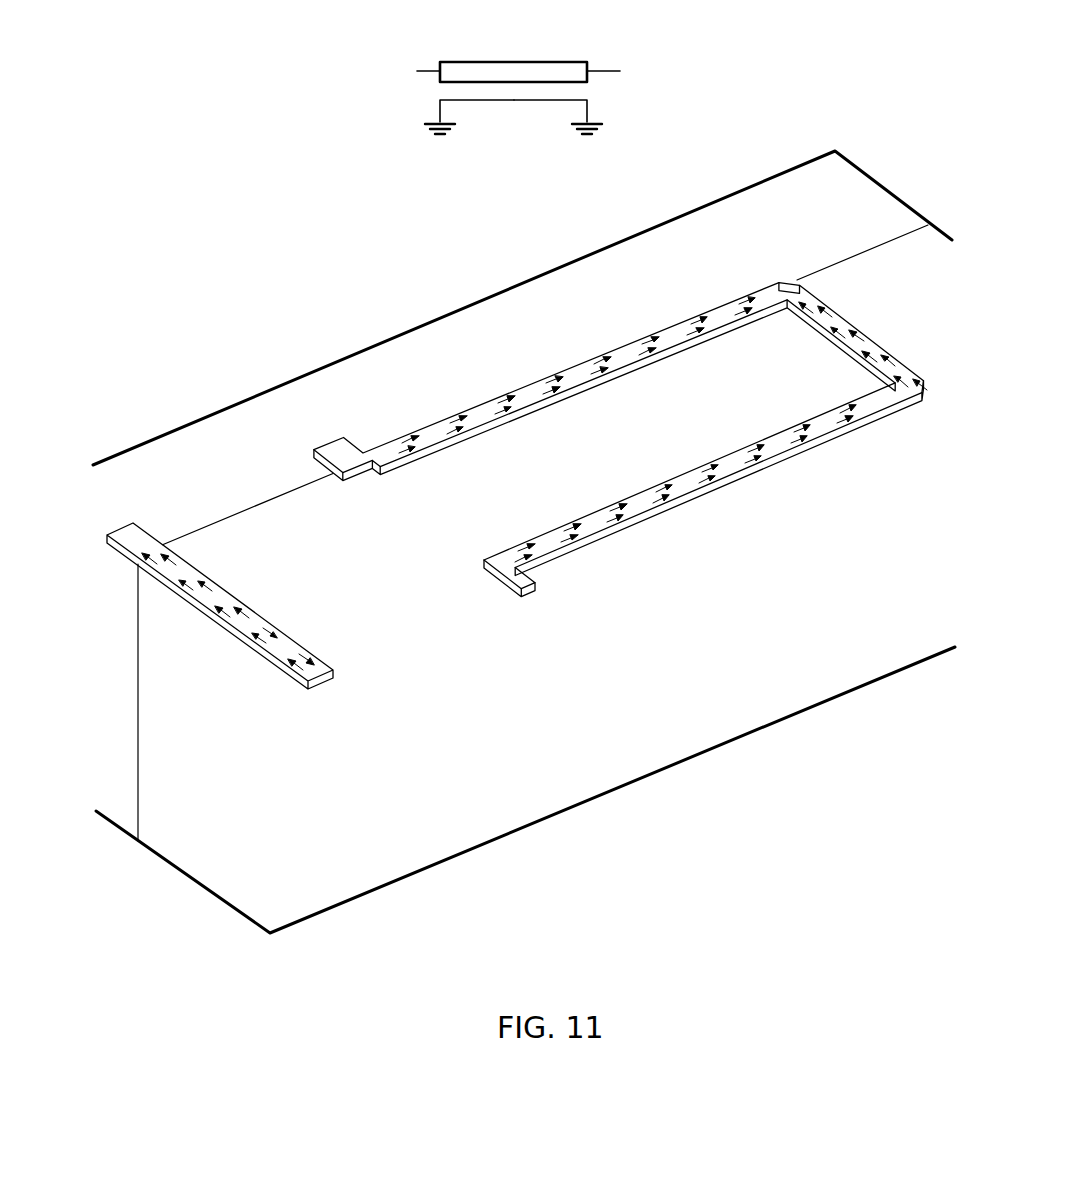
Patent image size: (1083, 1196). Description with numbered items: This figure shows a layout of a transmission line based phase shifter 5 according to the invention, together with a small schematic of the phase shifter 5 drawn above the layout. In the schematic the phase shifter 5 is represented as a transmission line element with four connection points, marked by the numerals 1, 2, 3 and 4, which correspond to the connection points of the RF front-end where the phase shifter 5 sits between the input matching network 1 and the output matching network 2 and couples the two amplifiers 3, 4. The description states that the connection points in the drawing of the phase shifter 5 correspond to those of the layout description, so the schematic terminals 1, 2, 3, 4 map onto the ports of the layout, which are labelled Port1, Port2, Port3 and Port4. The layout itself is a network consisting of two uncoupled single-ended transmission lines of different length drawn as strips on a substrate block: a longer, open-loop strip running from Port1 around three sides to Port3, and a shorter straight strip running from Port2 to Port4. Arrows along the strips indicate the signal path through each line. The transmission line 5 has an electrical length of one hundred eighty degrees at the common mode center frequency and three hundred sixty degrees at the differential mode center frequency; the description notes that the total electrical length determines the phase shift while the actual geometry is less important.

The input matching network 1 is at (412, 71).
The output matching network 2 is at (449, 111).
The amplifier 3 is at (615, 71).
The amplifier 4 is at (579, 111).
The phase shifter 5 is at (503, 61).
The port 1 of coupled line structure Port1 is at (318, 448).
The port 2 of coupled line structure Port2 is at (113, 535).
The port 3 of coupled line structure Port3 is at (521, 602).
The port 4 of coupled line structure Port4 is at (321, 688).